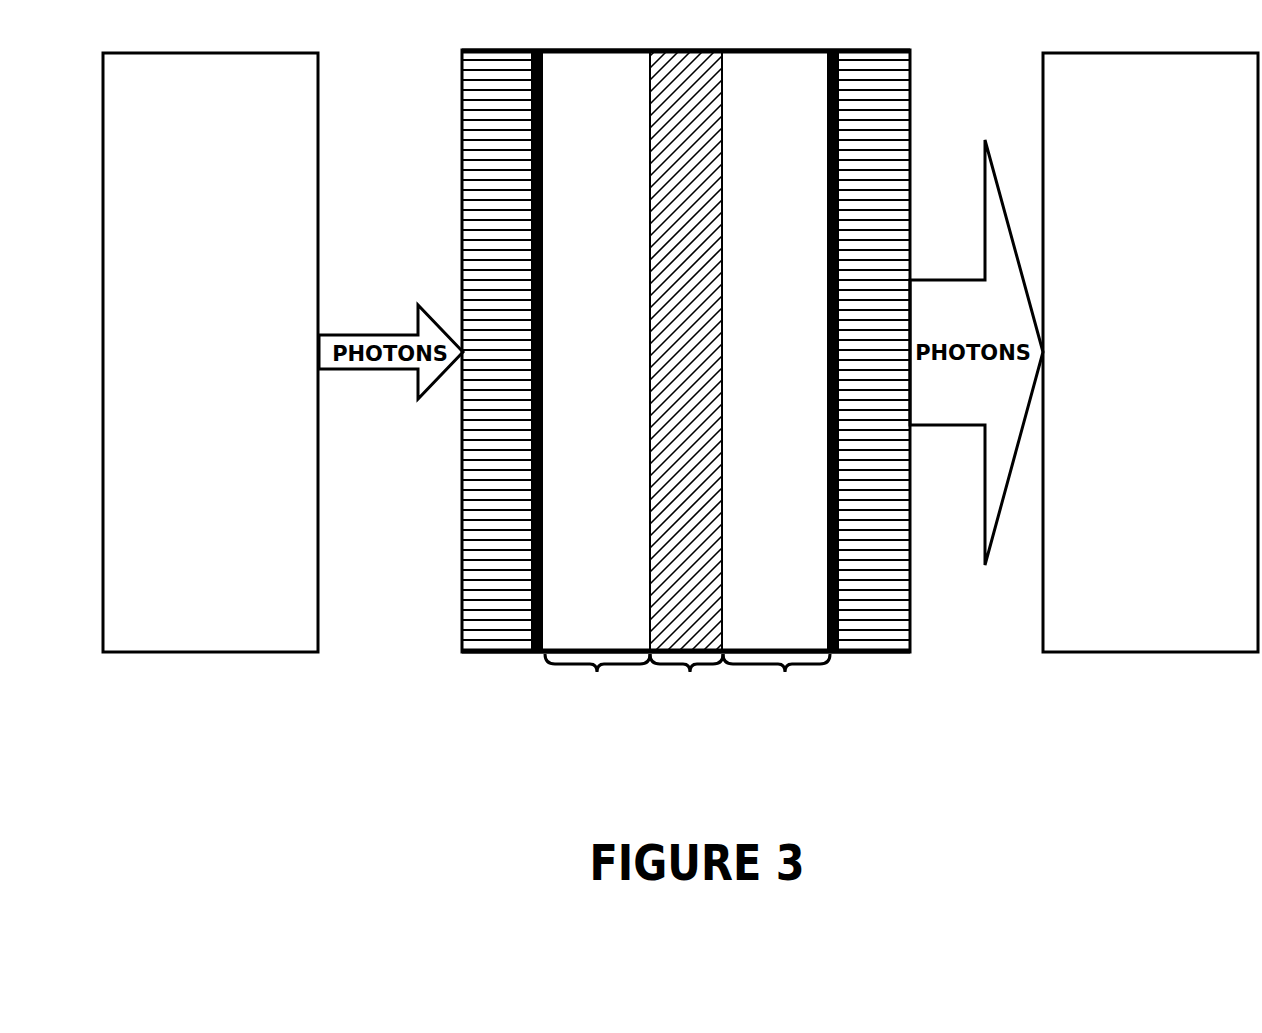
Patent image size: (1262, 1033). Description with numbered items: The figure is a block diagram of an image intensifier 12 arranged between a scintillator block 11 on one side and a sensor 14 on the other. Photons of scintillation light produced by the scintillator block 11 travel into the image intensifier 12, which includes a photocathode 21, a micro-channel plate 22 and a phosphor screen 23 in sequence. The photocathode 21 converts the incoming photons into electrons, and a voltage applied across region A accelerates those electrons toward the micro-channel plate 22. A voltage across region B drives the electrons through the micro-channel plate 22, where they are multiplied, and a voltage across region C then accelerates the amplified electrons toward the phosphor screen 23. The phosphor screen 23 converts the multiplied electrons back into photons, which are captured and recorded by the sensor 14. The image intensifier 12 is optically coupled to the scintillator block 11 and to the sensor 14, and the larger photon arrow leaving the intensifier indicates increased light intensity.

The scintillator block 11 is at (148, 653).
The image intensifier 12 is at (692, 363).
The sensor 14 is at (1150, 653).
The photocathode 21 is at (480, 655).
The micro-channel plate 22 is at (678, 50).
The phosphor screen 23 is at (886, 655).